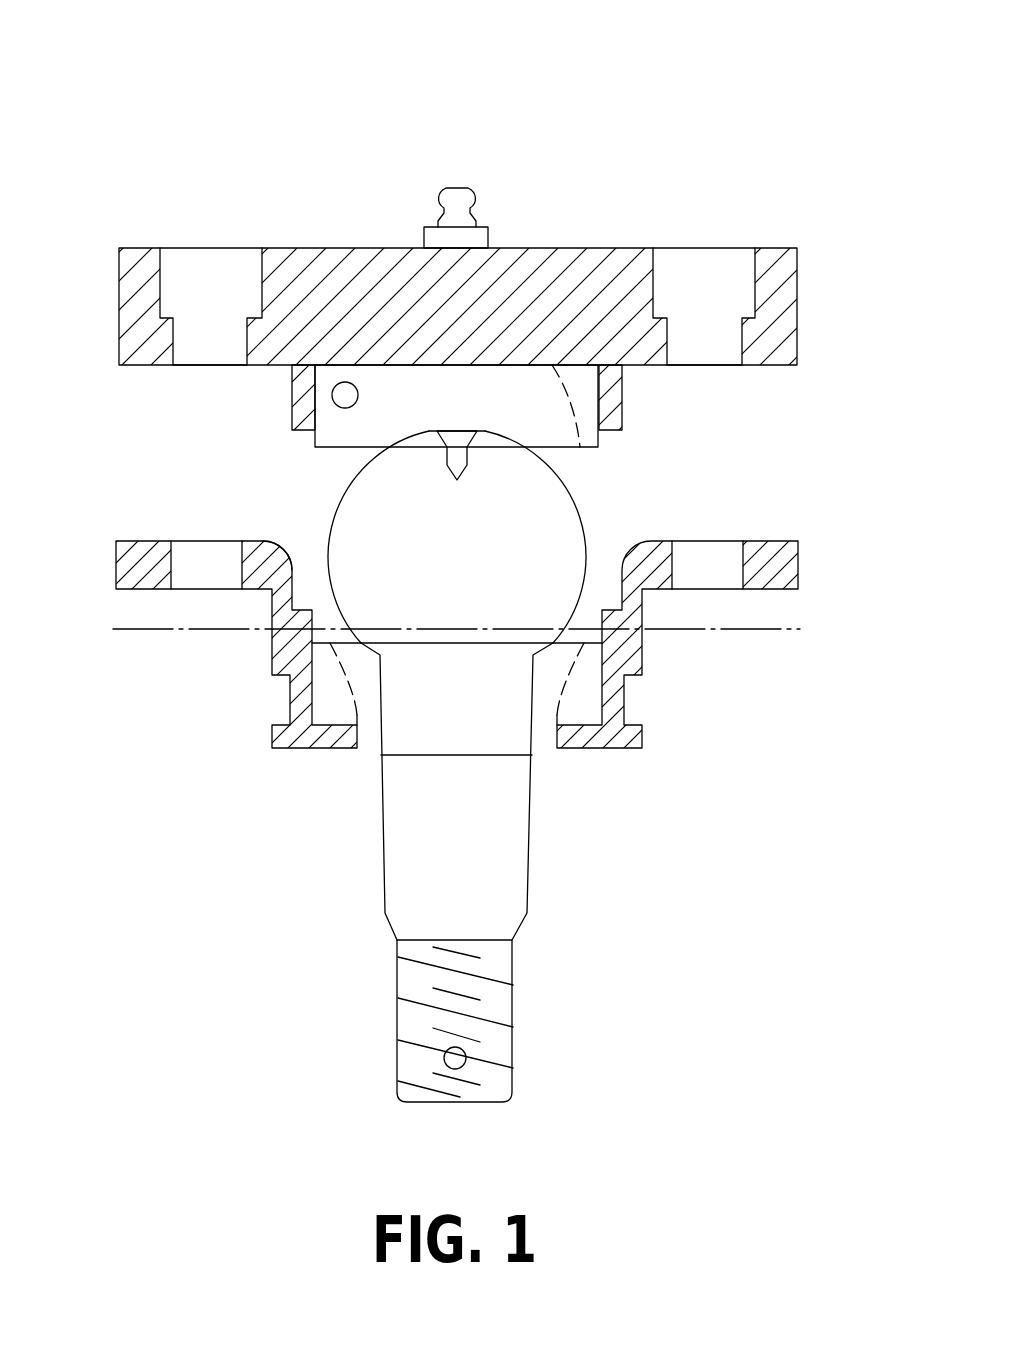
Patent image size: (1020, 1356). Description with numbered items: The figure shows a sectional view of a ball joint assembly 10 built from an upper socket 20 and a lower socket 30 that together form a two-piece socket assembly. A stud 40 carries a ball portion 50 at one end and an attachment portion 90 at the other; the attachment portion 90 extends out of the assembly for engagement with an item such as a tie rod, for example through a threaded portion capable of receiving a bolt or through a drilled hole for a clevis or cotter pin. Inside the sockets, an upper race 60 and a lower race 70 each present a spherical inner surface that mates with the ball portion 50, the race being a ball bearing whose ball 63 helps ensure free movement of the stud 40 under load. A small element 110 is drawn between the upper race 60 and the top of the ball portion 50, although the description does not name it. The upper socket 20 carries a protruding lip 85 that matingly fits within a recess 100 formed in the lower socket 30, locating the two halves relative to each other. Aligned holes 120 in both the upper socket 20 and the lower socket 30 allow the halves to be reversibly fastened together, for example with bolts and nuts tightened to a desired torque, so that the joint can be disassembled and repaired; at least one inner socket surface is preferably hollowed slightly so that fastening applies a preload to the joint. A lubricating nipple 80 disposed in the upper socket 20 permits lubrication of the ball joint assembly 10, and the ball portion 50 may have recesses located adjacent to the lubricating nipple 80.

The ball joint assembly 10 is at (500, 110).
The upper socket 20 is at (768, 267).
The lower socket 30 is at (130, 575).
The stud 40 is at (395, 830).
The ball portion 50 is at (555, 507).
The upper race 60 is at (585, 403).
The ball 63 is at (333, 445).
The lower race 70 is at (583, 710).
The lubricating nipple 80 is at (457, 250).
The protruding lip 85 is at (303, 405).
The attachment portion 90 is at (498, 1005).
The recess 100 is at (302, 585).
The pin 110 is at (457, 430).
The holes 120 is at (702, 277).